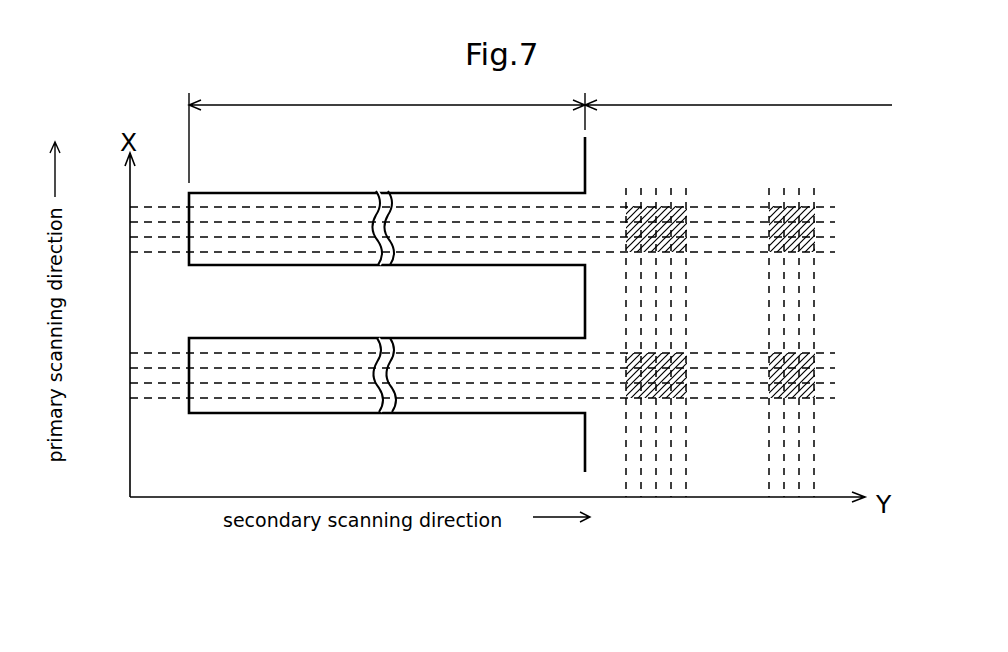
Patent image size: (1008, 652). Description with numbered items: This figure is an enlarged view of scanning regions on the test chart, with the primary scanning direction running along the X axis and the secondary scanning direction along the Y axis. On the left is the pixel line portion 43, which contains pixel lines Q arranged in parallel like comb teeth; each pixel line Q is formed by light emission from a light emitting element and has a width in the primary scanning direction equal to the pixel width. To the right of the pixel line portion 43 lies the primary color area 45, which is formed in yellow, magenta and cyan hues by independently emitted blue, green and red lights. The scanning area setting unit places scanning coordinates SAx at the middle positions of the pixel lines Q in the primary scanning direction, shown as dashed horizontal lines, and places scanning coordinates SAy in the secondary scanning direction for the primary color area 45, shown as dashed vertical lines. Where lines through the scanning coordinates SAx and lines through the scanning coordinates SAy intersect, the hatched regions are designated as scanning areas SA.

The pixel line portion 43 is at (378, 113).
The primary color area 45 is at (738, 96).
The pixel line Q is at (208, 191).
The scanning area SA is at (663, 207).
The scanning coordinate in the primary scanning direction SAx is at (130, 243).
The scanning coordinate in the secondary scanning direction SAy is at (626, 497).